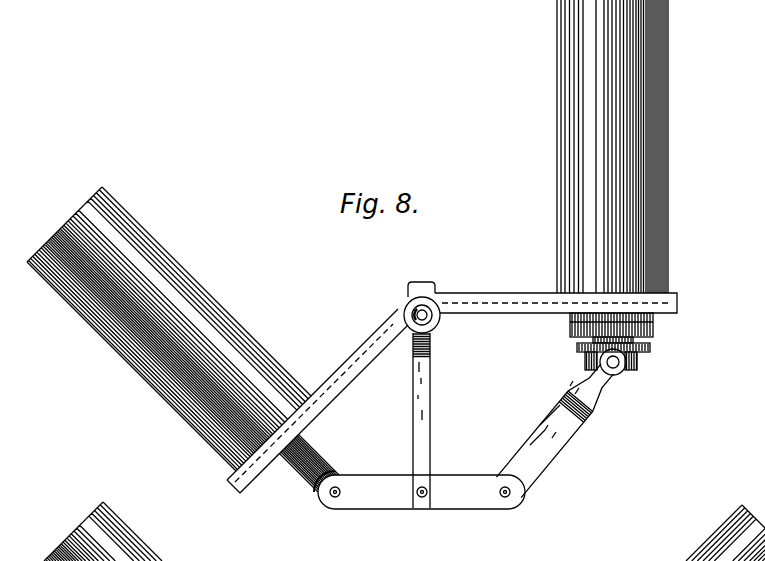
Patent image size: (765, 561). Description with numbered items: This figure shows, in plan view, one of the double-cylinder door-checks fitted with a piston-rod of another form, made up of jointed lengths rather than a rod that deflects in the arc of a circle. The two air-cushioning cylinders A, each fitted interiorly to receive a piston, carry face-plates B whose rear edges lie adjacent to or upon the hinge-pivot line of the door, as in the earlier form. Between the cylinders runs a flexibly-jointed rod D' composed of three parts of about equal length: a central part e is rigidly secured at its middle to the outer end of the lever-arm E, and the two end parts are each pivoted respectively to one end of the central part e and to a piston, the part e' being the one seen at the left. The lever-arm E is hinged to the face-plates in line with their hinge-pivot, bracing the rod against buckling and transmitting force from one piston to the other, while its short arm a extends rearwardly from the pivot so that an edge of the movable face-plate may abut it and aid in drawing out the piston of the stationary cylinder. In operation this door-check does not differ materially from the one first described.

The air-cushioning cylinder A is at (396, 280).
The face-plate B is at (352, 372).
The short arm a is at (422, 298).
The lever-arm E is at (430, 400).
The central part e is at (421, 492).
The end part e' is at (310, 464).
The flexibly-jointed rod D' is at (540, 423).